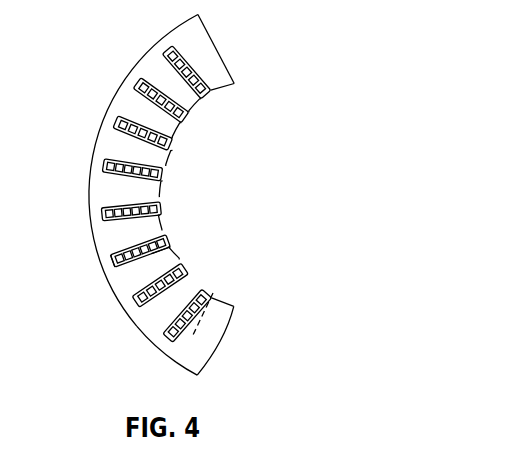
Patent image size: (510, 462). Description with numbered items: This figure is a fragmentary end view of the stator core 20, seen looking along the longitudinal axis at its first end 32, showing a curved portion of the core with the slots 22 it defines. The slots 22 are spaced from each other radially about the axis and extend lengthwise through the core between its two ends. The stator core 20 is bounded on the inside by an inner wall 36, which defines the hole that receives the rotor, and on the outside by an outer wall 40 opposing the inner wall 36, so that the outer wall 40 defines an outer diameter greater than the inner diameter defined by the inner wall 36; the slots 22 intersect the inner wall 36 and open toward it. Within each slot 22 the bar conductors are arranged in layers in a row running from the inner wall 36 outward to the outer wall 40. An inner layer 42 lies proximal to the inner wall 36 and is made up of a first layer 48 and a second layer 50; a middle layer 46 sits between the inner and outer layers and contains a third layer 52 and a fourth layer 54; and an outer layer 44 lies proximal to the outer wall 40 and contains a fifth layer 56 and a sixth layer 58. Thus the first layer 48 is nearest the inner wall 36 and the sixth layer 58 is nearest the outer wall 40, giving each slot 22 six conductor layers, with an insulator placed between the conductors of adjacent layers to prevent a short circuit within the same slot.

The stator core 20 is at (151, 192).
The slots 22 is at (150, 194).
The first end 32 is at (103, 197).
The inner wall 36 is at (199, 108).
The outer wall 40 is at (90, 152).
The inner layer 42 is at (214, 301).
The outer layer 44 is at (207, 362).
The middle layer 46 is at (202, 321).
The first layer 48 is at (159, 212).
The second layer 50 is at (155, 238).
The third layer 52 is at (150, 257).
The fourth layer 54 is at (130, 292).
The fifth layer 56 is at (130, 260).
The sixth layer 58 is at (112, 257).